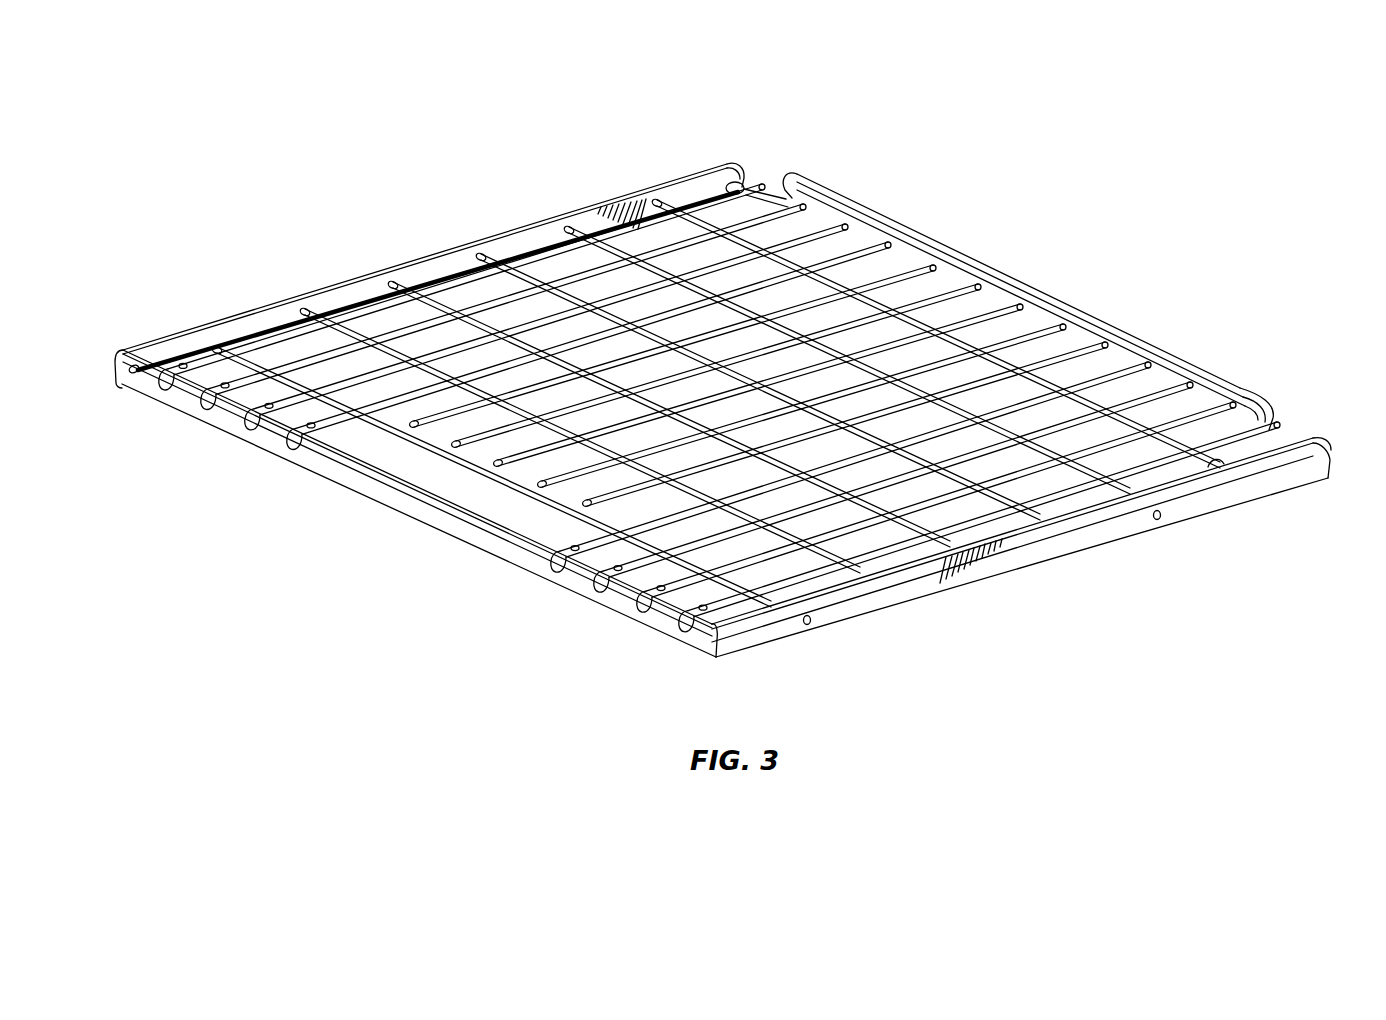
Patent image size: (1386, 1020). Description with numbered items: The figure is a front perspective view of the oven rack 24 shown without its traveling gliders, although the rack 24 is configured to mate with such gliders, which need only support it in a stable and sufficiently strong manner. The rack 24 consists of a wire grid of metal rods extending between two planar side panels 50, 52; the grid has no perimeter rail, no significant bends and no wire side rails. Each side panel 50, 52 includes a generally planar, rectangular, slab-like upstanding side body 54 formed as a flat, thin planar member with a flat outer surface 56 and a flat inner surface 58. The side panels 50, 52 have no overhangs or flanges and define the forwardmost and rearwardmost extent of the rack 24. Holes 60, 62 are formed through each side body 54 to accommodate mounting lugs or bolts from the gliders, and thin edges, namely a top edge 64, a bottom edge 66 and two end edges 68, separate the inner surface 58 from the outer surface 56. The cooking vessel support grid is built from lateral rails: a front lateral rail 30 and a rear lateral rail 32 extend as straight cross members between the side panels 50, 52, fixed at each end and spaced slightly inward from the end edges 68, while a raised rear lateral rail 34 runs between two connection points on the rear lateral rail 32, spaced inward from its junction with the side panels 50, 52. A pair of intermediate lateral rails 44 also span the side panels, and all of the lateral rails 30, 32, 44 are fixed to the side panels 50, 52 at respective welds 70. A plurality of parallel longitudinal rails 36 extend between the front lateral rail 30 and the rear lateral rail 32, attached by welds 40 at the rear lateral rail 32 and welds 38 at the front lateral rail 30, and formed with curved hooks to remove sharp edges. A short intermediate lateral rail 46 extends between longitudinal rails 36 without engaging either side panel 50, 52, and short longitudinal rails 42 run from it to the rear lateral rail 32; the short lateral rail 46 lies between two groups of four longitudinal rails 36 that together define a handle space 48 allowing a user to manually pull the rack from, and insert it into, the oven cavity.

The rack 24 is at (536, 184).
The front lateral rail 30 is at (468, 513).
The rear lateral rail 32 is at (770, 189).
The raised rear lateral rail 34 is at (850, 208).
The longitudinal rails 36 is at (421, 290).
The welds 38 is at (286, 445).
The welds 40 is at (748, 178).
The short longitudinal rails 42 is at (584, 500).
The intermediate lateral rails 44 is at (352, 327).
The short intermediate lateral rail 46 is at (418, 440).
The handle space 48 is at (343, 443).
The side panel 50 is at (875, 626).
The side panel 52 is at (245, 313).
The side body 54 is at (1080, 556).
The outer surface 56 is at (1045, 549).
The inner surface 58 is at (160, 357).
The hole 60 is at (807, 628).
The hole 62 is at (1160, 522).
The top edge 64 is at (1218, 465).
The bottom edge 66 is at (1293, 485).
The end edges 68 is at (1317, 443).
The welds 70 is at (483, 250).